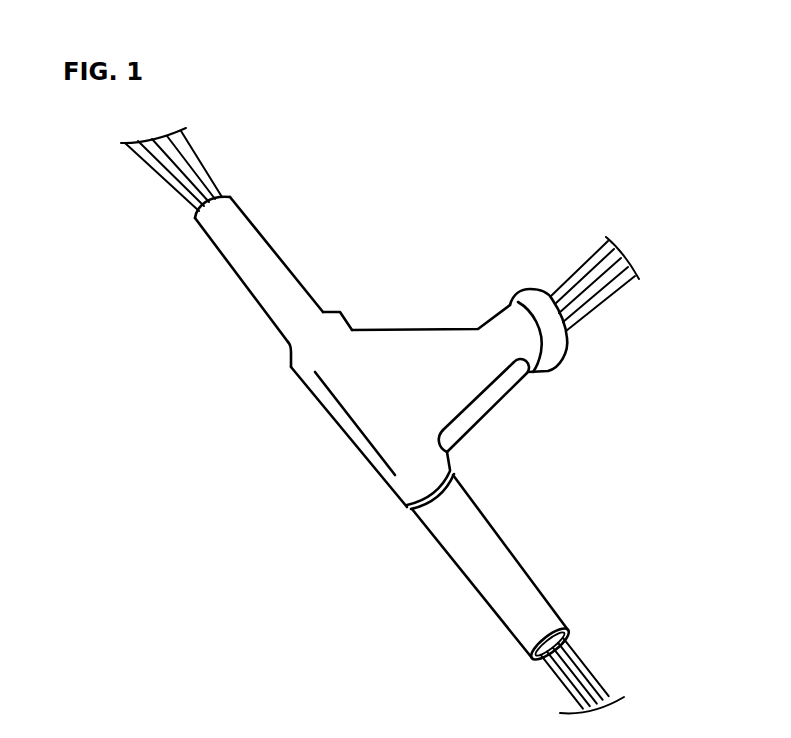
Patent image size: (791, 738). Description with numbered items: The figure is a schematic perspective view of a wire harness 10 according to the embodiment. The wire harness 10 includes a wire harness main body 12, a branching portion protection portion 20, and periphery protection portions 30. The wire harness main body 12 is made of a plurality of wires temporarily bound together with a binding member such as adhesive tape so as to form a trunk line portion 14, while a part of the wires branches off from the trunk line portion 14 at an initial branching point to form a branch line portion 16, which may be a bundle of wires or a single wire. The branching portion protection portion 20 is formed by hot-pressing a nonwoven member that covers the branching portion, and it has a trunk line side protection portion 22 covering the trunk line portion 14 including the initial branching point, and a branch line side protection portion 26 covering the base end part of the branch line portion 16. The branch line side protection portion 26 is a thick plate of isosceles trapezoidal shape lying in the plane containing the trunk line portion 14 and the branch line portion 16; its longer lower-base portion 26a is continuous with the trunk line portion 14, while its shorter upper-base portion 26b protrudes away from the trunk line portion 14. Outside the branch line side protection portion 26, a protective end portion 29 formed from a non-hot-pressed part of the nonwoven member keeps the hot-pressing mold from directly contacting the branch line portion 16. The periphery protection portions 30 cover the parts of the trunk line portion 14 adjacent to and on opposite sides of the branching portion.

The wire harness 10 is at (430, 270).
The wire harness main body 12 is at (606, 680).
The trunk line portion 14 is at (578, 655).
The branch line portion 16 is at (602, 302).
The branching portion protection portion 20 is at (383, 327).
The trunk line side protection portion 22 is at (377, 430).
The branch line side protection portion 26 is at (455, 378).
The portion corresponding to the lower base 26a is at (398, 378).
The portion corresponding to the upper base 26b is at (488, 330).
The protective end portion 29 is at (565, 362).
The periphery protection portion 30 is at (270, 262).